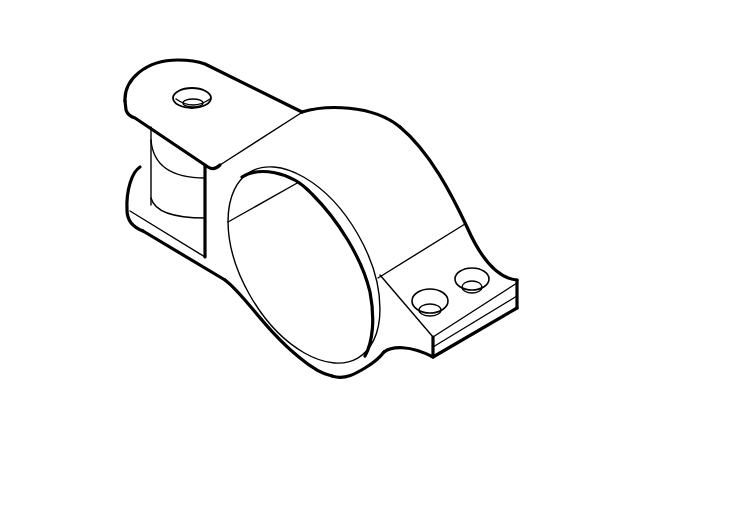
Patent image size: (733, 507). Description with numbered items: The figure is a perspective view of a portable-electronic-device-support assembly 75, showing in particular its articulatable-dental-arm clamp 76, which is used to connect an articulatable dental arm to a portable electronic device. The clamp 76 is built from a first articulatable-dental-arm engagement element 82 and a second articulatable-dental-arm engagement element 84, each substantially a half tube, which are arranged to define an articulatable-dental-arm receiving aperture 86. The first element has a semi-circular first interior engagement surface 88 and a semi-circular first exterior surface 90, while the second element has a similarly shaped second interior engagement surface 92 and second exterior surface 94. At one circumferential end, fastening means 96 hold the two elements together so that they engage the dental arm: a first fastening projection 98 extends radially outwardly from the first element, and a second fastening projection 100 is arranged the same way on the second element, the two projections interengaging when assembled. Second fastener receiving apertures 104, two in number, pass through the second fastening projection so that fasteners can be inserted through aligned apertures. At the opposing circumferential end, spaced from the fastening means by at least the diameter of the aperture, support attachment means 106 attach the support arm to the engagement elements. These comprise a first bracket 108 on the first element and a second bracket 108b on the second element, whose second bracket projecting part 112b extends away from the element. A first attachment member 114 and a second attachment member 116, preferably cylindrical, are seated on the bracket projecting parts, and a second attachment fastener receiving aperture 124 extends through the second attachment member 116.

The portable-electronic-device-support assembly 75 is at (593, 208).
The articulatable-dental-arm clamp 76 is at (438, 215).
The first articulatable-dental-arm engagement element 82 is at (350, 364).
The second articulatable-dental-arm engagement element 84 is at (424, 174).
The articulatable-dental-arm receiving aperture 86 is at (280, 280).
The first interior engagement surface 88 is at (291, 342).
The first exterior surface 90 is at (387, 357).
The second interior engagement surface 92 is at (263, 190).
The second exterior surface 94 is at (365, 135).
The fastening means 96 is at (493, 307).
The first fastening projection 98 is at (467, 343).
The second fastening projection 100 is at (510, 278).
The second fastener receiving aperture 104 is at (473, 280).
The support attachment means 106 is at (143, 215).
The first bracket 108 is at (167, 243).
The second bracket 108b is at (140, 88).
The second bracket projecting part 112b is at (225, 85).
The first attachment member 114 is at (163, 190).
The second attachment member 116 is at (153, 150).
The second attachment fastener receiving aperture 124 is at (190, 93).